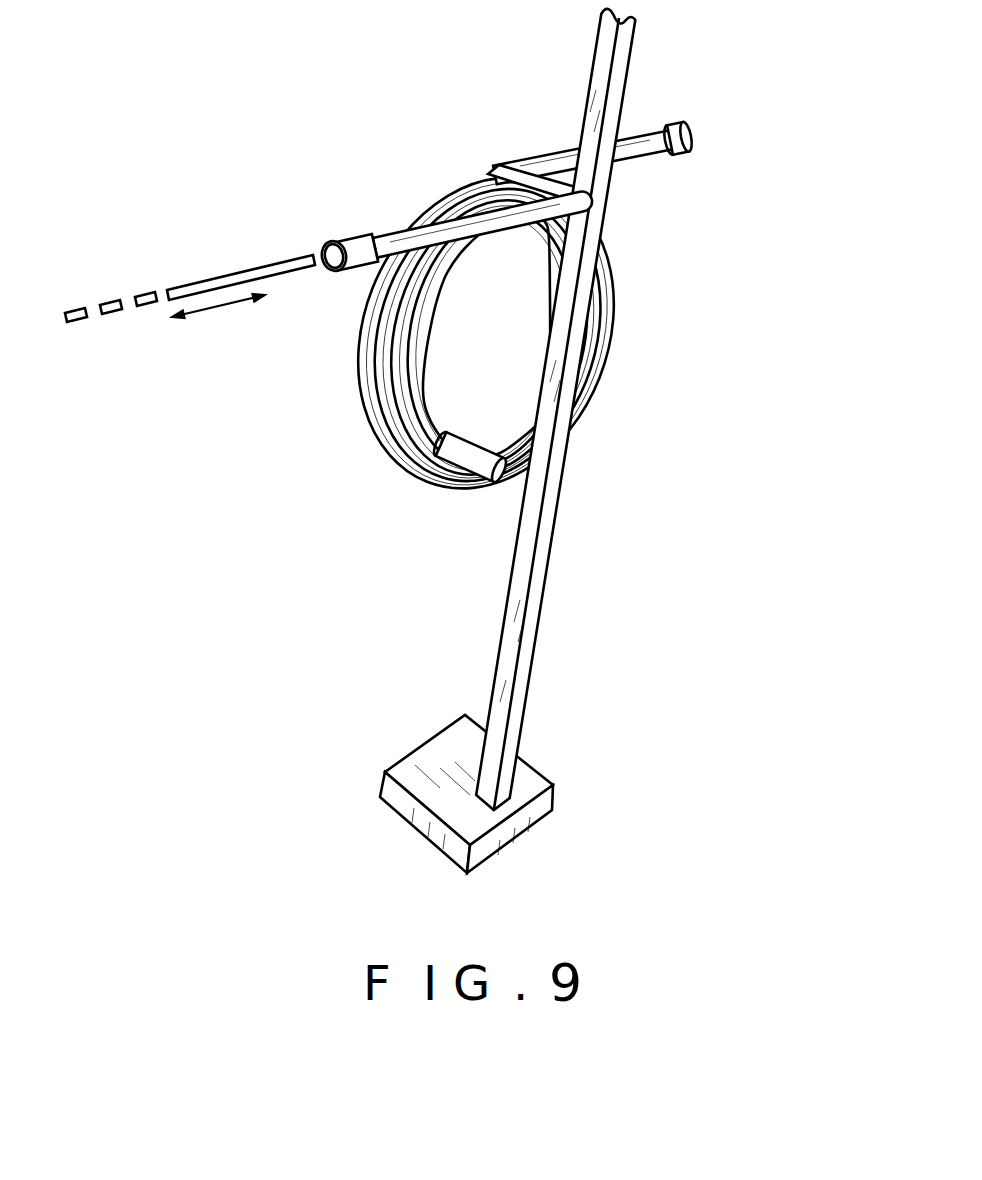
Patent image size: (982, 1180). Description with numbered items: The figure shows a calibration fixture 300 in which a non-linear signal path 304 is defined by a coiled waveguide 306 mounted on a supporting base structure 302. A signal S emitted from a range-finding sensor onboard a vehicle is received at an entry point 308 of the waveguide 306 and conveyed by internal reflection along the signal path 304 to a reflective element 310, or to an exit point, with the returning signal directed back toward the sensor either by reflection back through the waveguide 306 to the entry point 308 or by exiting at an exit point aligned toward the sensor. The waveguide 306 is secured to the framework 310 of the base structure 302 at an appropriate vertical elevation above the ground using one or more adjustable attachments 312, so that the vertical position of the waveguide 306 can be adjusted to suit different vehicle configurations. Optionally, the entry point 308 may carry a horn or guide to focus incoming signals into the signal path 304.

The calibration fixture 300 is at (434, 441).
The supporting base structure 302 is at (540, 644).
The non-linear signal path 304 is at (446, 335).
The waveguide 306 is at (387, 352).
The entry point 308 is at (353, 242).
The reflective element / framework 310 is at (681, 125).
The adjustable attachment 312 is at (527, 176).
The signal S is at (212, 278).